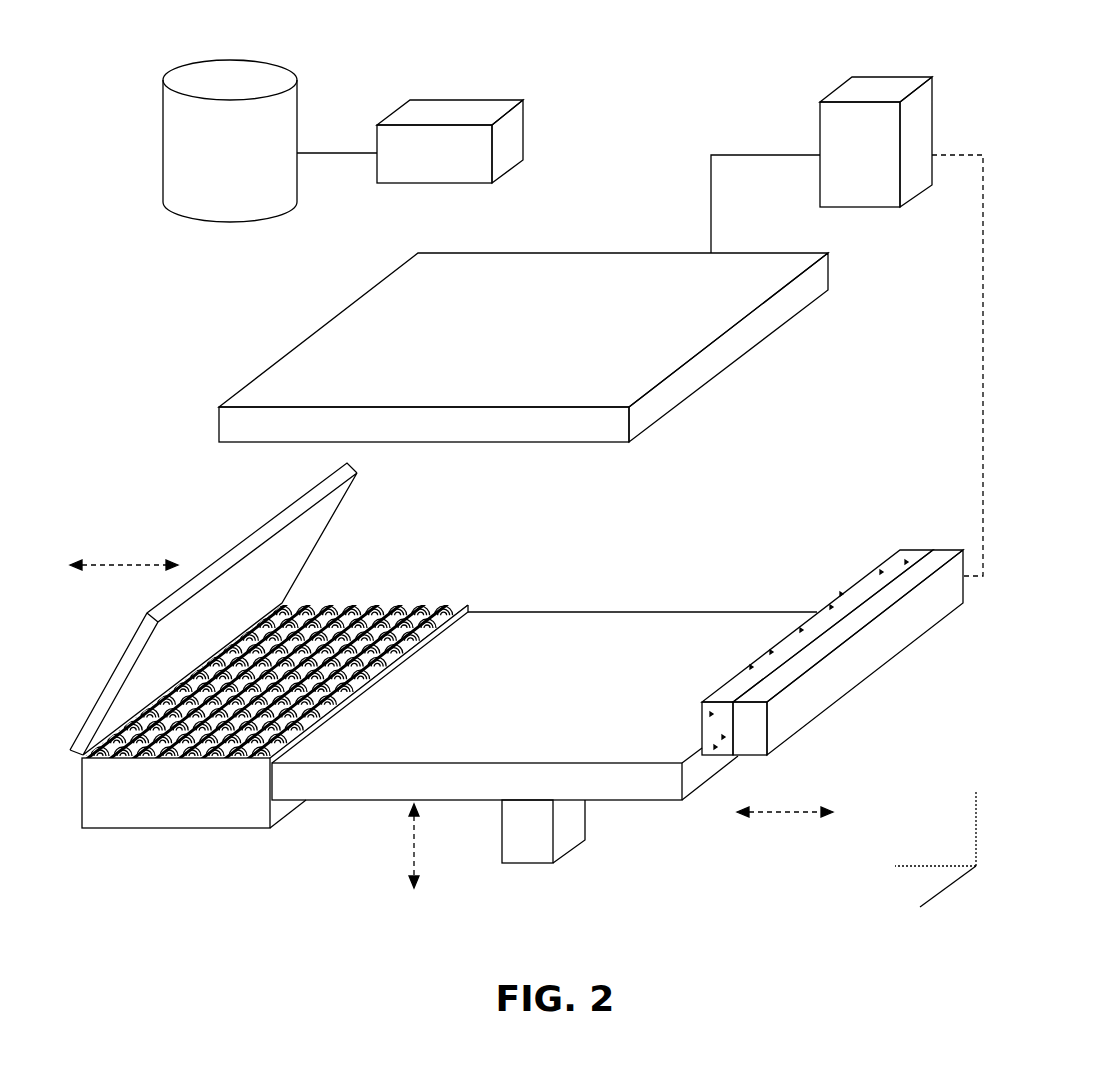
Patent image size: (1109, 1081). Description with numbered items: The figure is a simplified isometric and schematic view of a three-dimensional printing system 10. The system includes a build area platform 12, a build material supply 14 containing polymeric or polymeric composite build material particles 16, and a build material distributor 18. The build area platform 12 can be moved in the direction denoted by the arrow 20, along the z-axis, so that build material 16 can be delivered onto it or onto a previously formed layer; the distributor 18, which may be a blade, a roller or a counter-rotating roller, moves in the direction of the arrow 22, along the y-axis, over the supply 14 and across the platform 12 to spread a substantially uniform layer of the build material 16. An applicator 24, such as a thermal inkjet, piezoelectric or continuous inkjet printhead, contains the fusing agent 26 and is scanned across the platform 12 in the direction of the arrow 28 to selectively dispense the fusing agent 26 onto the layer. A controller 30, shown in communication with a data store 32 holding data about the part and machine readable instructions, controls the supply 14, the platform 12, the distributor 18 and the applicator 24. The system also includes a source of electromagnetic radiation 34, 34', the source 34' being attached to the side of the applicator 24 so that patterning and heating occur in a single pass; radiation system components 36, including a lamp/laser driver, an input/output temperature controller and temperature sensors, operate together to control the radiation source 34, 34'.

The 3D printing system 10 is at (145, 142).
The build area platform 12 is at (637, 802).
The build material supply 14 is at (175, 830).
The polymeric or polymeric composite build material 16 is at (103, 762).
The build material distributor 18 is at (203, 566).
The arrow 20 is at (410, 835).
The arrow 22 is at (115, 562).
The applicator 24 is at (912, 550).
The fusing agent 26 is at (843, 600).
The arrow 28 is at (782, 815).
The controller 30 is at (297, 100).
The data store 32 is at (457, 100).
The source of electromagnetic radiation 34 is at (523, 295).
The source of electromagnetic radiation 34' is at (855, 602).
The radiation system components 36 is at (858, 172).